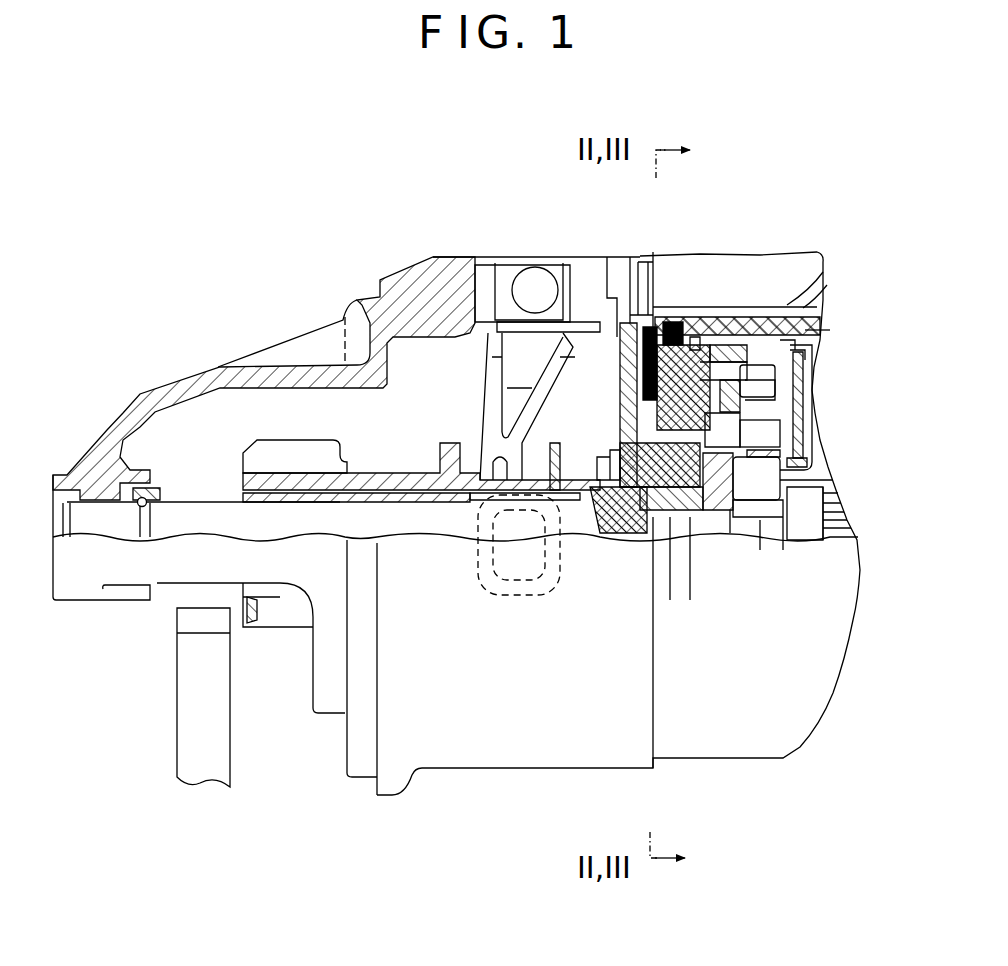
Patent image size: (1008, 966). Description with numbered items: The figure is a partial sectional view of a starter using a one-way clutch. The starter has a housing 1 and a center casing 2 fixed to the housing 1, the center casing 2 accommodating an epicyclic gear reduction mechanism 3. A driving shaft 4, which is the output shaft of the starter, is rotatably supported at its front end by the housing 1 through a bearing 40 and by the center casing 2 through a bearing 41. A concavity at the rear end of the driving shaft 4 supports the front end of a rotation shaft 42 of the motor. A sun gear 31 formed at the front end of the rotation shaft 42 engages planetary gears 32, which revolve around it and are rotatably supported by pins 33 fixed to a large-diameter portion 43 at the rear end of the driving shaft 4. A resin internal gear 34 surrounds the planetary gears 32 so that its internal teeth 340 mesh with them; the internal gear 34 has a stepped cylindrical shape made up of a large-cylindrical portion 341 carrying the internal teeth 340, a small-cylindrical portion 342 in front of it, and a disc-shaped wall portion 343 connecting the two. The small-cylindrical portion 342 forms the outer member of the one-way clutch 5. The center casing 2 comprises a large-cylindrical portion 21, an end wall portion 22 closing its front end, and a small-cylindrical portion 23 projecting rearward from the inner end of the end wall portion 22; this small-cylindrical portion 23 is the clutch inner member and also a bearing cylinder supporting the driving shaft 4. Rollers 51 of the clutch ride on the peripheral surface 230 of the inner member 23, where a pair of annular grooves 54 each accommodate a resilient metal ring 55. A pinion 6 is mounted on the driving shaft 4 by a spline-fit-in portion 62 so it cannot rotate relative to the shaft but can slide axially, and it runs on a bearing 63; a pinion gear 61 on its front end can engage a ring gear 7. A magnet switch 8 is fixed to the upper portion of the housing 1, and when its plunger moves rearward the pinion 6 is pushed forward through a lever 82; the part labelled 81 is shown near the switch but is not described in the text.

The housing 1 is at (150, 410).
The center casing 2 is at (823, 262).
The epicyclic gear reduction mechanism 3 is at (790, 423).
The driving shaft 4 is at (345, 613).
The one-way clutch 5 is at (685, 338).
The pinion 6 is at (386, 458).
The ring gear 7 is at (200, 727).
The magnet switch 8 is at (822, 290).
The large-cylindrical portion 21 is at (806, 332).
The end wall portion 22 is at (570, 480).
The small-cylindrical portion 23 is at (670, 520).
The sun gear 31 is at (785, 520).
The planetary gears 32 is at (760, 520).
The pins 33 is at (793, 312).
The internal gear 34 is at (693, 338).
The bearing 40 is at (85, 478).
The bearing 41 is at (655, 540).
The rotation shaft 42 is at (763, 533).
The large-diameter portion 43 is at (717, 342).
The rollers 51 is at (625, 325).
The annular grooves 54 is at (597, 520).
The ring 55 is at (510, 560).
The pinion gear 61 is at (290, 452).
The spline-fit-in portion 62 is at (497, 513).
The bearing 63 is at (262, 508).
The boss 81 is at (490, 275).
The lever 82 is at (490, 375).
The peripheral surface 230 is at (660, 560).
The internal teeth 340 is at (743, 342).
The large-cylindrical portion 341 is at (770, 328).
The small-cylindrical portion 342 is at (657, 387).
The wall portion 343 is at (670, 342).